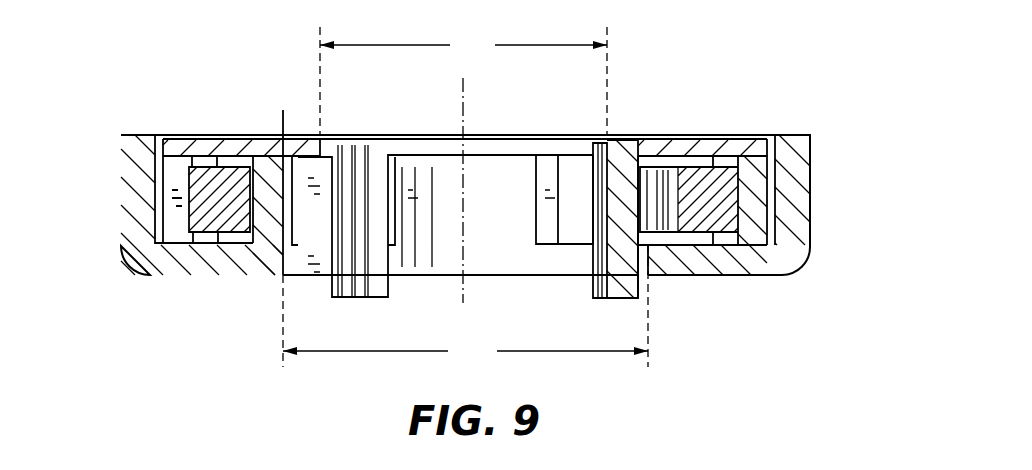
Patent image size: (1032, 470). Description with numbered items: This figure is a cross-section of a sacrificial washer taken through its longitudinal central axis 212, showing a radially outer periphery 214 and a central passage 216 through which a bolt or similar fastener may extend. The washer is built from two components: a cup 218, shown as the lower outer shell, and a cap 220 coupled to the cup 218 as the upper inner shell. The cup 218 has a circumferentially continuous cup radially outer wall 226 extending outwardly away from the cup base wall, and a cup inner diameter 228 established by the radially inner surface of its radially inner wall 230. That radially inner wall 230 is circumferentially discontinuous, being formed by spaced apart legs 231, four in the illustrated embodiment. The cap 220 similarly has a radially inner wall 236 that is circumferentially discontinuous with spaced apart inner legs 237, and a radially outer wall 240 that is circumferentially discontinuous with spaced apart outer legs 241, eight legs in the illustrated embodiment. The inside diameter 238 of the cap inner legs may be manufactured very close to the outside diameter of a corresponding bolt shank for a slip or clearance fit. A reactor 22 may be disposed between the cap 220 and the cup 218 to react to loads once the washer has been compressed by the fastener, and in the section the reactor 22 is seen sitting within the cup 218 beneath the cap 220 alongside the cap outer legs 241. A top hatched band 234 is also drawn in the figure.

The reactor 22 is at (202, 226).
The longitudinal central axis 212 is at (463, 93).
The radially outer periphery 214 is at (811, 188).
The passage 216 is at (518, 244).
The cup 218 is at (123, 271).
The cap 220 is at (721, 136).
The cup radially outer wall 226 is at (792, 160).
The cup inner diameter 228 is at (465, 306).
The radially inner wall 230 is at (270, 140).
The legs 231 is at (267, 220).
The top hatched band 234 is at (205, 140).
The radially inner wall 236 is at (623, 300).
The inner legs 237 is at (623, 183).
The inside diameter 238 is at (463, 81).
The radially outer wall 240 is at (758, 245).
The outer legs 241 is at (178, 185).